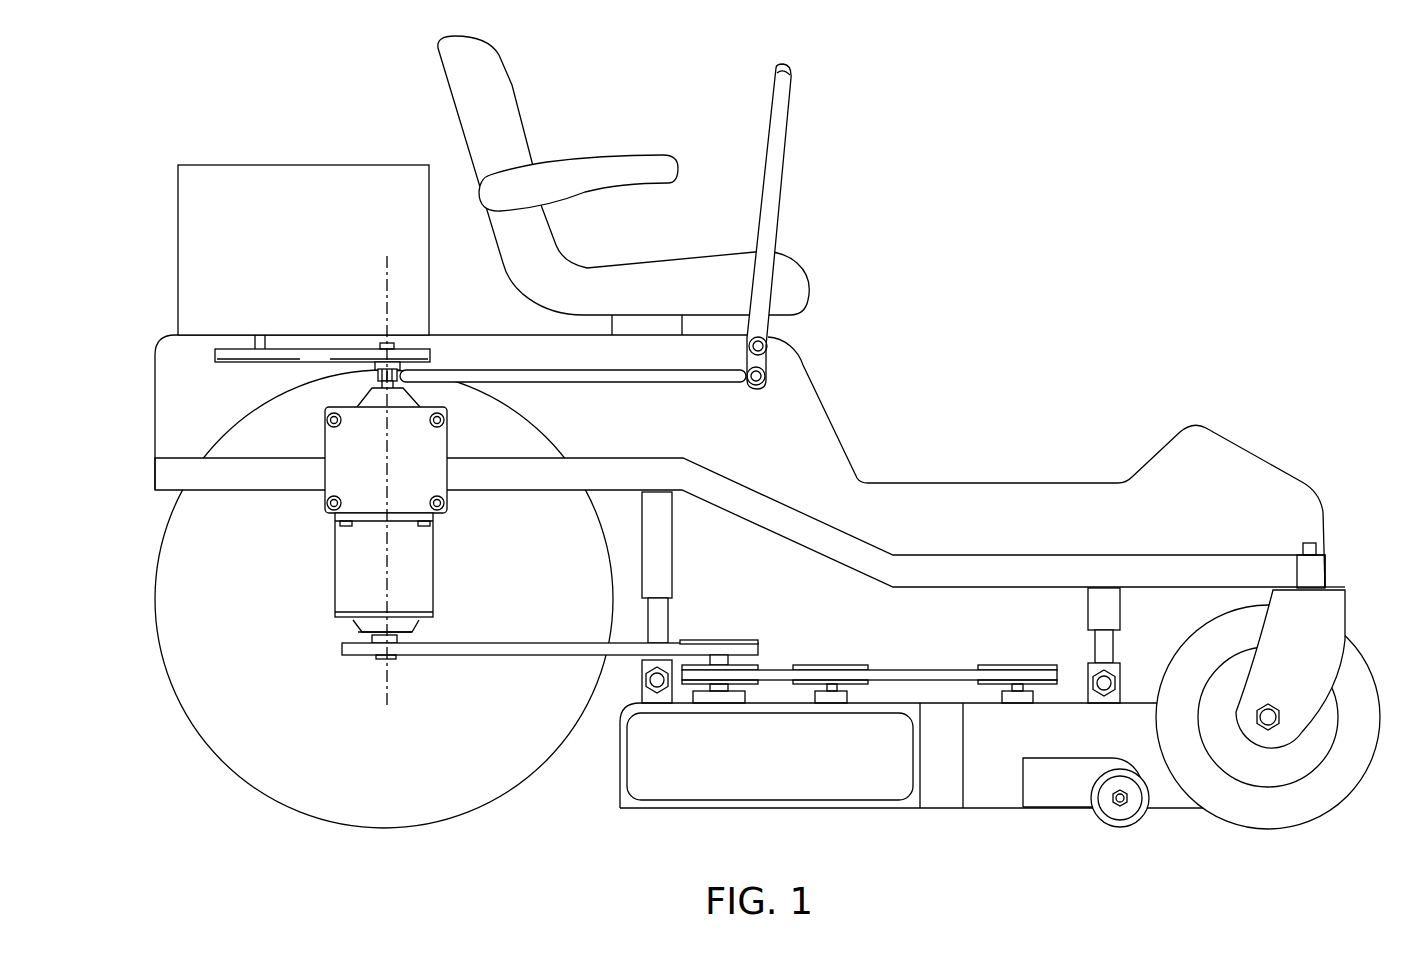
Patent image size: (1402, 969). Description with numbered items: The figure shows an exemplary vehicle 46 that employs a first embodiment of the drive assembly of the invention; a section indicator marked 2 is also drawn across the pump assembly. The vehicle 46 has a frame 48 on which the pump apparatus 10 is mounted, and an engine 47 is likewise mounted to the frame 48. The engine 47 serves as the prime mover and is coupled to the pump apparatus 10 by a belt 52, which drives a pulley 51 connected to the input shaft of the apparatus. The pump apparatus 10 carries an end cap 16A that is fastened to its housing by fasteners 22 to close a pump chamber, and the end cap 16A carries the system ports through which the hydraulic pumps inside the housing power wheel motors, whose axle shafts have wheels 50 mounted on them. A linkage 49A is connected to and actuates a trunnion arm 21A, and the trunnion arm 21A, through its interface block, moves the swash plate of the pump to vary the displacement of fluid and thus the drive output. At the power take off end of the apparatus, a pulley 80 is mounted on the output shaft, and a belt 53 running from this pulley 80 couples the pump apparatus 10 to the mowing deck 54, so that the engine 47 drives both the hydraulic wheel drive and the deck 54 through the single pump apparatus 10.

The pump apparatus 10 is at (280, 584).
The vehicle 46 is at (1063, 220).
The engine 47 is at (316, 209).
The frame 48 is at (957, 555).
The linkage 49A is at (700, 383).
The wheels 50 is at (468, 772).
The pulley 51 is at (240, 363).
The belt 52 is at (322, 349).
The belt 53 is at (513, 656).
The deck 54 is at (1074, 743).
The end cap 16A is at (440, 475).
The trunnion arm 21A is at (410, 380).
The fasteners 22 is at (326, 503).
The pulley 80 is at (408, 655).
The section line for FIG. 2 is at (387, 257).